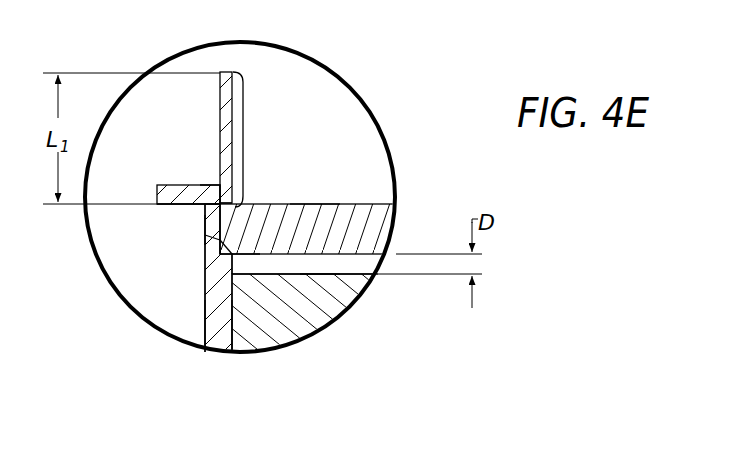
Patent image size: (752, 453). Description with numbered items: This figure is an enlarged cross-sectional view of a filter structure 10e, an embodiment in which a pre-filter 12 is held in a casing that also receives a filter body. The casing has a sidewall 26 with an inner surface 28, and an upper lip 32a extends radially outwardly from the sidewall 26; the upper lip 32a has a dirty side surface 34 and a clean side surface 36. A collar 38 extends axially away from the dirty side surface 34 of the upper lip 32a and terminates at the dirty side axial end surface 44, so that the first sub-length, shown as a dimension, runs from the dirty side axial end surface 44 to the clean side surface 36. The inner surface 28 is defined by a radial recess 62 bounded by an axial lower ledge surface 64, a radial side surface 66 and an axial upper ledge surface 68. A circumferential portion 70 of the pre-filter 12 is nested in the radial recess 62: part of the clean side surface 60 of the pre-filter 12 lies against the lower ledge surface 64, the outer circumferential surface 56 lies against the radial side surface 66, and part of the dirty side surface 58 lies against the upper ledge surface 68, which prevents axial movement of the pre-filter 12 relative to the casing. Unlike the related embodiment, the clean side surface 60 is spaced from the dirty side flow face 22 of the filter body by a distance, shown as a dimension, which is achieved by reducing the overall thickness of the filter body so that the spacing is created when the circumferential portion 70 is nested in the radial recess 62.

The filter structure 10e is at (308, 97).
The pre-filter 12 is at (374, 224).
The dirty side flow face 22 is at (357, 273).
The sidewall 26 is at (204, 329).
The inner surface 28 is at (235, 337).
The upper lip 32a is at (170, 176).
The dirty side surface 34 is at (208, 183).
The clean side surface 36 is at (184, 207).
The collar 38 is at (243, 120).
The dirty side axial end surface 44 is at (226, 71).
The outer circumferential surface 56 is at (243, 253).
The dirty side surface 58 is at (303, 204).
The clean side surface 60 is at (323, 204).
The radial recess 62 is at (201, 229).
The lower ledge surface 64 is at (230, 246).
The radial side surface 66 is at (219, 240).
The upper ledge surface 68 is at (246, 200).
The circumferential portion 70 is at (228, 228).